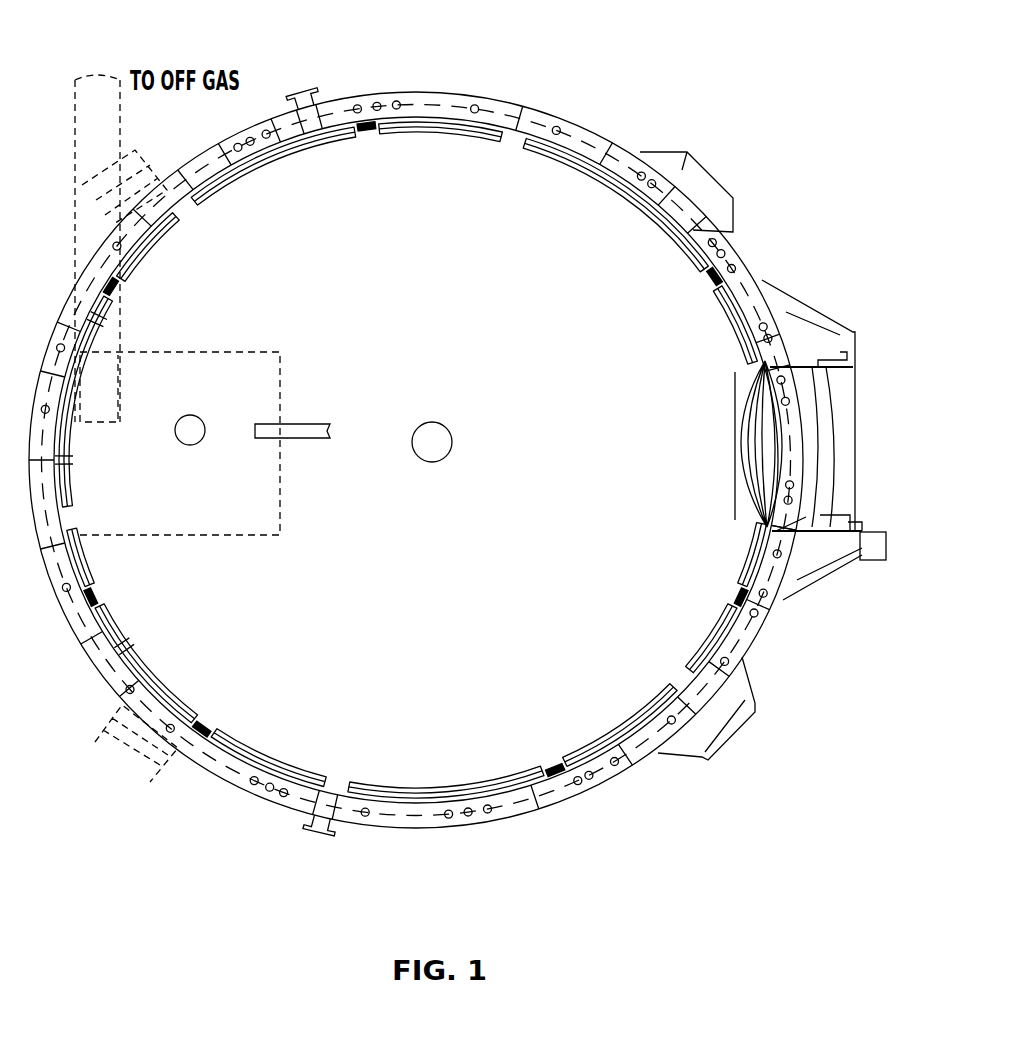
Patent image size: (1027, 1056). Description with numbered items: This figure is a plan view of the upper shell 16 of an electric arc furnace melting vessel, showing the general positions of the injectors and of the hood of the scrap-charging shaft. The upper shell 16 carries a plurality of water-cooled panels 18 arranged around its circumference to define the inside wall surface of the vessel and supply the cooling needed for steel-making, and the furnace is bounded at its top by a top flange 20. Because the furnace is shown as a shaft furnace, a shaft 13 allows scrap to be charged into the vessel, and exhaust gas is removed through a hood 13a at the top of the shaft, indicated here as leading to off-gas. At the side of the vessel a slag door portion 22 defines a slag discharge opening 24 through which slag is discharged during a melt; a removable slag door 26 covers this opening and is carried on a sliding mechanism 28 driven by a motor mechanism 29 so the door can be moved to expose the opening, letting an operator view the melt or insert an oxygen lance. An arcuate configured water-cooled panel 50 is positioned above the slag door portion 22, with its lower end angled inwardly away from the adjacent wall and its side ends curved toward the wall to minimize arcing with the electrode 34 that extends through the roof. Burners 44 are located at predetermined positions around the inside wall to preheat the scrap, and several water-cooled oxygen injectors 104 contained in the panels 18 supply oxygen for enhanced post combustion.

The shaft 13 is at (218, 352).
The hood 13a is at (128, 380).
The upper shell 16 is at (238, 641).
The water-cooled panels 18 is at (543, 143).
The top flange 20 is at (446, 93).
The slag door portion 22 is at (733, 383).
The slag discharge opening 24 is at (777, 472).
The slag door 26 is at (850, 403).
The sliding mechanism 28 is at (860, 520).
The motor mechanism 29 is at (863, 561).
The electrode 34 is at (324, 454).
The burners 44 is at (105, 322).
The arcuate configured water-cooled panel 50 is at (730, 426).
The water-cooled oxygen injector 104 is at (370, 134).